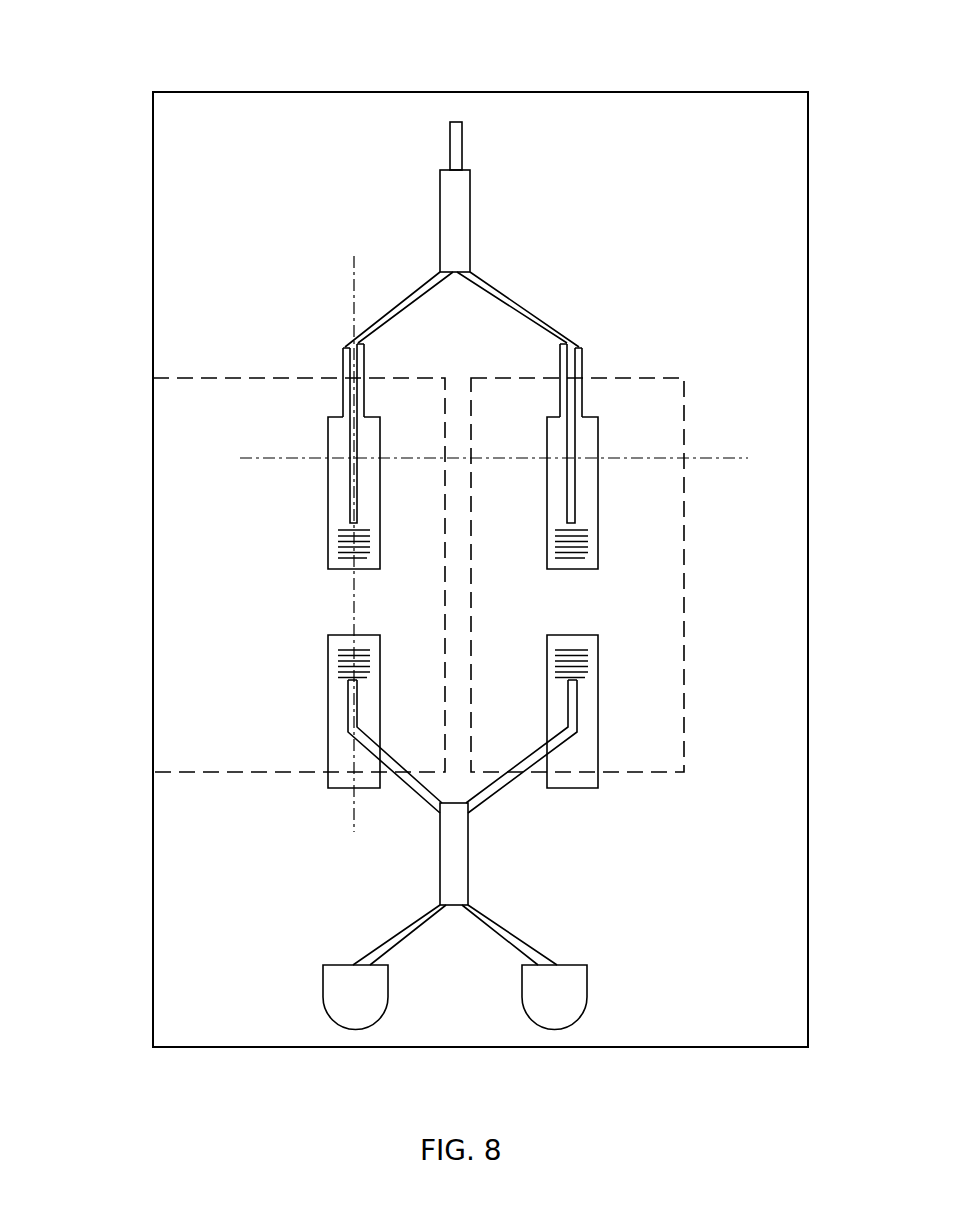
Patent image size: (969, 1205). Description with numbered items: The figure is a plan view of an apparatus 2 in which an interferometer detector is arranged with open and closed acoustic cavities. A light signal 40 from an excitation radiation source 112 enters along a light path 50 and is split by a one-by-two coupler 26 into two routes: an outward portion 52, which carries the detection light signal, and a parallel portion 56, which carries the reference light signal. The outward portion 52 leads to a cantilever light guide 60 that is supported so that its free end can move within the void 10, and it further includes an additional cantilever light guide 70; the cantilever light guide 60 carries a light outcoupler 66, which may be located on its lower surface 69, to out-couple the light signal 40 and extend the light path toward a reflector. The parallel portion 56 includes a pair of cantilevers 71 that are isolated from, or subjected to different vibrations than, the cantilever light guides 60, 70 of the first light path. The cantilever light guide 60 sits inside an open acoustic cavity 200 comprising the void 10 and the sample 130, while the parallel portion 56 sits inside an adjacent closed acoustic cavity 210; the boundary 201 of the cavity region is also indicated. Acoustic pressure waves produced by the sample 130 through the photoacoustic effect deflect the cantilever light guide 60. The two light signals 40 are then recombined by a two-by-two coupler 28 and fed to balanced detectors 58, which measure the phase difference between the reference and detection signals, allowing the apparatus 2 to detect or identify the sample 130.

The apparatus 2 is at (790, 92).
The excitation radiation source 112 is at (432, 74).
The light signal 40 is at (462, 124).
The light path 50 is at (467, 152).
The 1×2 coupler 26 is at (473, 193).
The outward portion 52 is at (412, 290).
The parallel portion 56 is at (523, 300).
The lower surface 69 is at (572, 407).
The cantilever light guide 60 is at (380, 440).
The cantilever 71 is at (598, 438).
The light outcoupler 66 is at (340, 550).
The cantilever light guide 70 is at (382, 700).
The 2×2 coupler 28 is at (468, 865).
The balanced detectors 58 is at (388, 998).
The open acoustic cavity 200 is at (177, 550).
The closed acoustic cavity 210 is at (648, 583).
The side wall 201 is at (153, 443).
The void 10 is at (253, 600).
The sample 130 is at (242, 657).